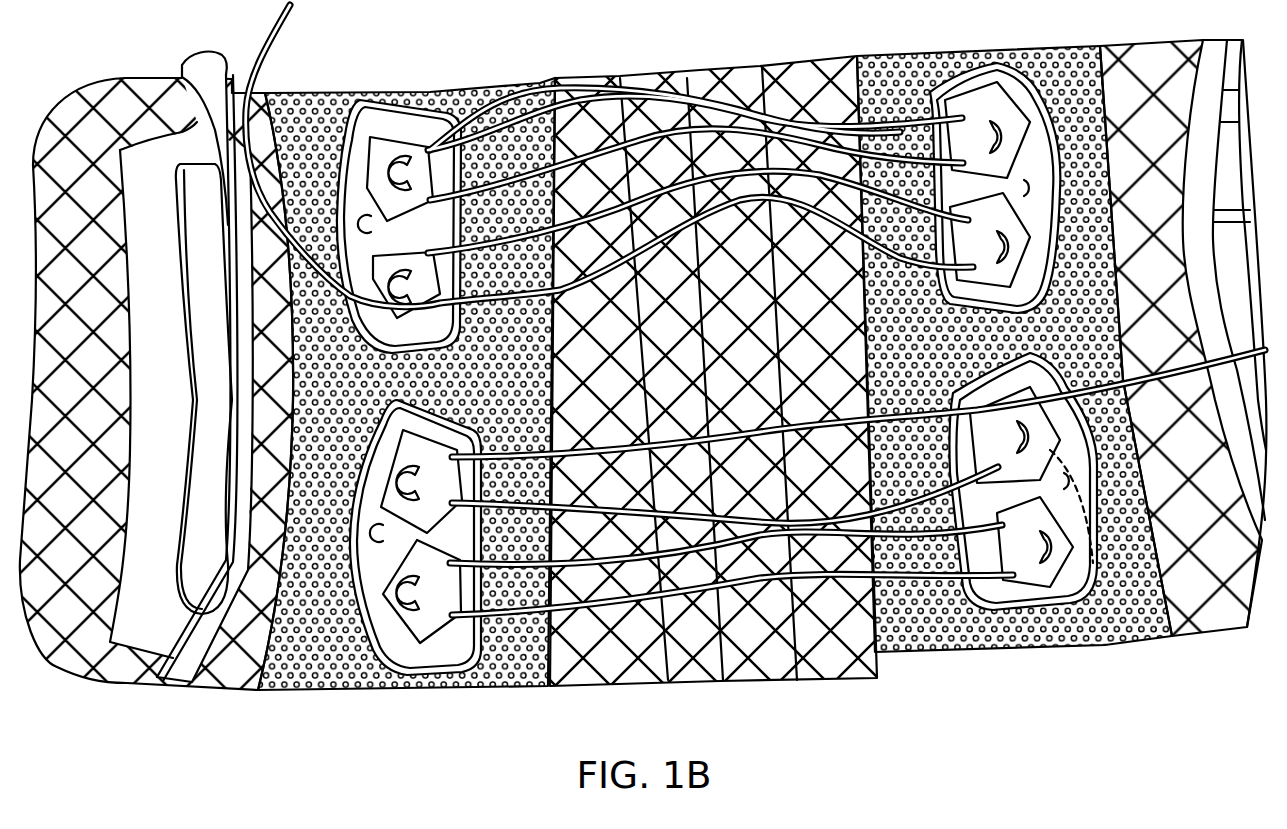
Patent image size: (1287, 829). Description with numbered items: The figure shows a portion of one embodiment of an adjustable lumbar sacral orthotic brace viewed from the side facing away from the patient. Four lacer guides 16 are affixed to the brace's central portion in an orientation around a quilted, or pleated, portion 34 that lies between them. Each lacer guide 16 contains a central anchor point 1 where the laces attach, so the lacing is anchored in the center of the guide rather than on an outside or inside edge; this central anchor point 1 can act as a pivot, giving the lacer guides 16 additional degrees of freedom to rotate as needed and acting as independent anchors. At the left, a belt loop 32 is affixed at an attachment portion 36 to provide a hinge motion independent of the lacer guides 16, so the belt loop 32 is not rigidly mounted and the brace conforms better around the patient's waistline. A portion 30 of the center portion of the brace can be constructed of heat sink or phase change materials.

The central anchor point 1 is at (643, 370).
The lacer guide 16 is at (417, 647).
The portion of the center portion 30 is at (78, 603).
The belt loop 32 is at (147, 617).
The quilted or pleated portion 34 is at (717, 640).
The attachment portion 36 is at (240, 667).